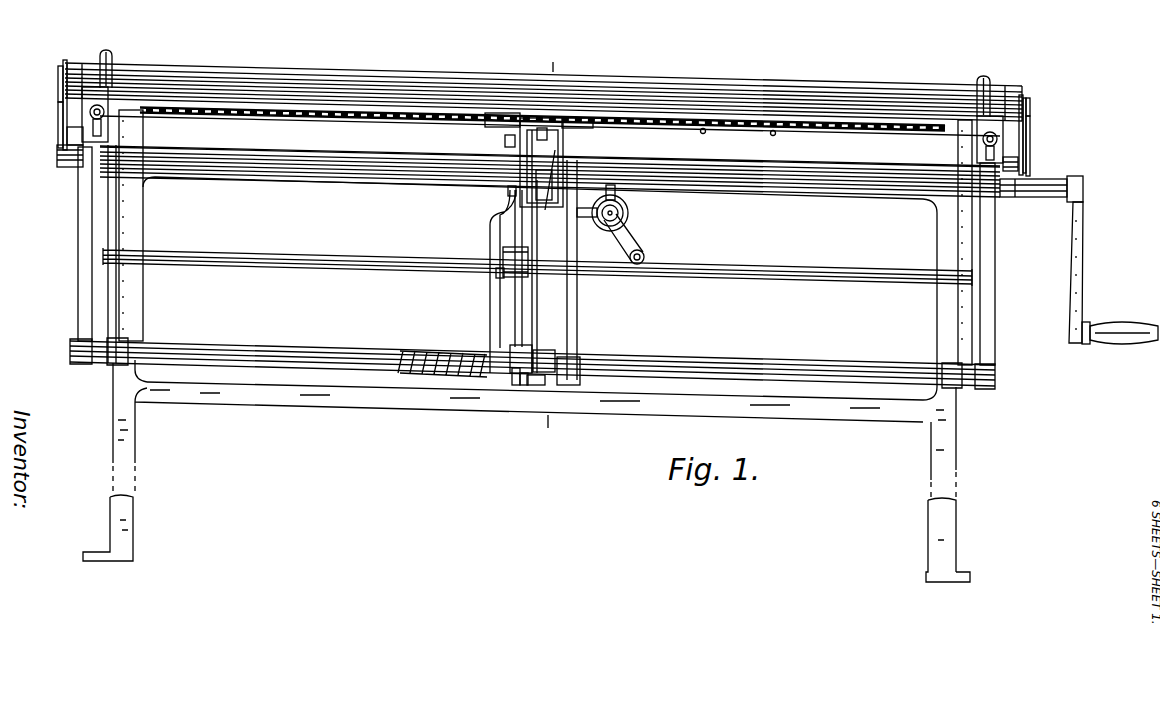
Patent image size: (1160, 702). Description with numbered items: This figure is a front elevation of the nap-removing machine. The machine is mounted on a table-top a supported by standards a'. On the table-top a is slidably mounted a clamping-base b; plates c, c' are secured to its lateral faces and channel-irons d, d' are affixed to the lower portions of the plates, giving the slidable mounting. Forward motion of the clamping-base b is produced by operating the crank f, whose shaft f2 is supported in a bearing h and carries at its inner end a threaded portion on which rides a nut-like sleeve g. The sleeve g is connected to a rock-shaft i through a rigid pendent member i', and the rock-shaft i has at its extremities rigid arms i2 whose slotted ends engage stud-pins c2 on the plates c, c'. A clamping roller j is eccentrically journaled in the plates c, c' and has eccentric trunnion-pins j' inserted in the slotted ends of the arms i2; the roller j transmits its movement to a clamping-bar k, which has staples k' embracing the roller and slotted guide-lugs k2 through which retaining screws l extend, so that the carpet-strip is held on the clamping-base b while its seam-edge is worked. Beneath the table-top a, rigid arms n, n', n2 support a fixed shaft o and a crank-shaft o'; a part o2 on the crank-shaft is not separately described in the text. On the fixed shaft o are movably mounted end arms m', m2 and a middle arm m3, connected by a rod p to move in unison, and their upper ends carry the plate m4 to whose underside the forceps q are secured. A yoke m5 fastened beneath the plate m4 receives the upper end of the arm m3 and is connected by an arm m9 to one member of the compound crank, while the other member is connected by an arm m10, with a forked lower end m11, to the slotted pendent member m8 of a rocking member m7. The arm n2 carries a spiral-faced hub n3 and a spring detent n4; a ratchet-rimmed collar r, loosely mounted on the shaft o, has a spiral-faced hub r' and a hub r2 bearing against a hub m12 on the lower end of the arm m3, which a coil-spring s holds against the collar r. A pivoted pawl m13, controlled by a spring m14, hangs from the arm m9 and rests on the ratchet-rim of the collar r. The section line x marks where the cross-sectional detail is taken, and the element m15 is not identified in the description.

The clamping roller j is at (543, 87).
The clamping-bar k is at (542, 88).
The table-top a is at (550, 141).
The clamping-base b is at (754, 138).
The standards a' is at (526, 363).
The rod p is at (537, 266).
The fixed shaft o is at (532, 363).
The rigid arm n' is at (75, 244).
The arm m2 is at (124, 219).
The arm m' is at (931, 242).
The rigid arm n is at (1000, 264).
The staples k' is at (549, 67).
The retaining screws l is at (100, 108).
The slotted guide-lugs k2 is at (104, 128).
The plate c' is at (34, 84).
The trunnion-pins j' is at (554, 108).
The rigid arms i2 is at (58, 120).
The channel-iron d' is at (52, 165).
The rigid pendent member i' is at (351, 173).
The plate c is at (1045, 134).
The stud-pins c2 is at (1032, 120).
The rock-shaft i is at (1044, 146).
The channel-iron d is at (1037, 158).
The crank-shaft o' is at (1041, 203).
The crank handle o2 is at (1113, 273).
The yoke m5 is at (564, 154).
The arm m9 is at (580, 104).
The spring m14 is at (545, 126).
The section line x— x is at (549, 245).
The lug m15 is at (505, 141).
The rocking member m7 is at (508, 192).
The arm m10 is at (516, 226).
The middle arm m3 is at (492, 247).
The pivoted pawl m13 is at (536, 283).
The pendent member m8 is at (512, 272).
The forked lower end m11 is at (499, 277).
The hub m12 is at (501, 350).
The rigid arm n2 is at (578, 296).
The spiral-faced hub n3 is at (556, 363).
The spring detent n4 is at (537, 385).
The spiral-faced hub r' is at (544, 346).
The hub r2 is at (515, 380).
The ratchet-rimmed collar r is at (504, 417).
The coil-spring s is at (442, 354).
The nut-like sleeve g is at (609, 230).
The bearing h is at (589, 220).
The crank f is at (630, 240).
The shaft f2 is at (624, 217).
The forceps q is at (703, 120).
The plate m4 is at (771, 118).